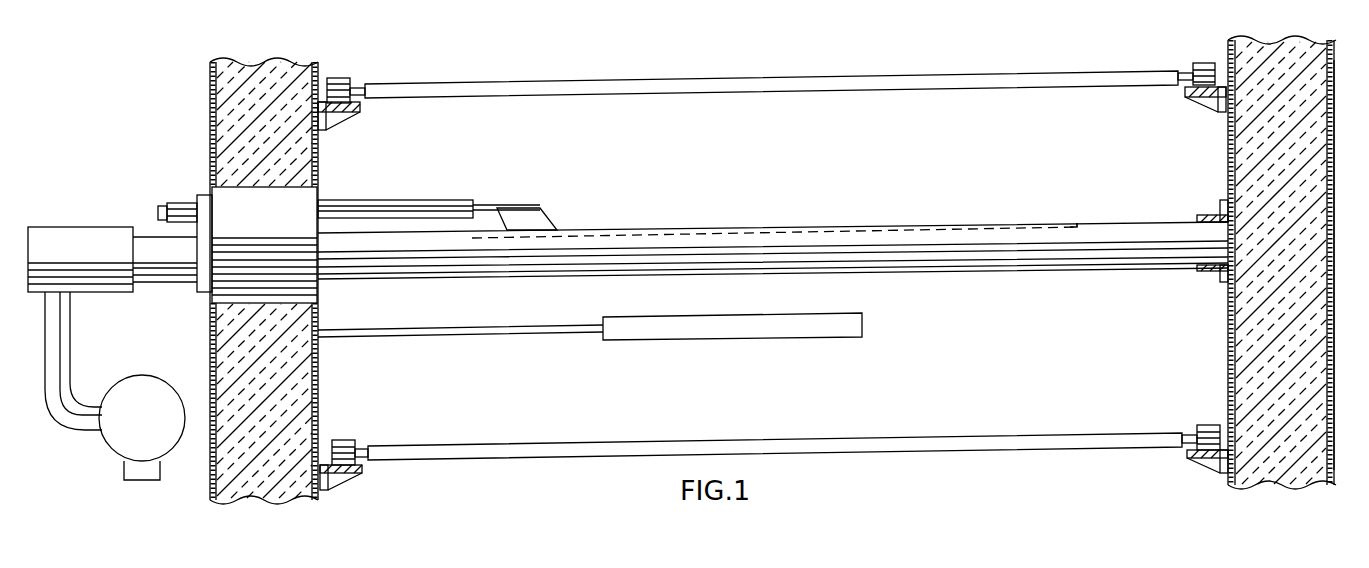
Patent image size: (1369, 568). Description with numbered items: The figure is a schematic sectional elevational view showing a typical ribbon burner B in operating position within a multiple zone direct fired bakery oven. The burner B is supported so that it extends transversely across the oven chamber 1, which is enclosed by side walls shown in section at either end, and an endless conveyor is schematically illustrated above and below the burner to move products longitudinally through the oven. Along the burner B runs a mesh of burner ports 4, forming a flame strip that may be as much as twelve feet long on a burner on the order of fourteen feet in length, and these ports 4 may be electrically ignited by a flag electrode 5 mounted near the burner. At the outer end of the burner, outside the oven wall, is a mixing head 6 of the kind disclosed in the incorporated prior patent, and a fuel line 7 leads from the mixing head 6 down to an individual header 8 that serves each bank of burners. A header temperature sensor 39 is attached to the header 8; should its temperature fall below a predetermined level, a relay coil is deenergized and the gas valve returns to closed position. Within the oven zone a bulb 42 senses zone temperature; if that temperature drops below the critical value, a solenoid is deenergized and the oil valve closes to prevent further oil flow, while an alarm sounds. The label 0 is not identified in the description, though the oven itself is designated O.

The oven chamber 1 is at (680, 271).
The burner ports 4 is at (667, 233).
The flag electrode 5 is at (518, 208).
The mixing head 6 is at (78, 238).
The fuel line 7 is at (66, 432).
The header 8 is at (152, 393).
The header temperature sensor 39 is at (139, 481).
The bulb 42 is at (730, 325).
The ribbon burner B is at (1103, 222).
The wall surface 0 is at (1337, 272).